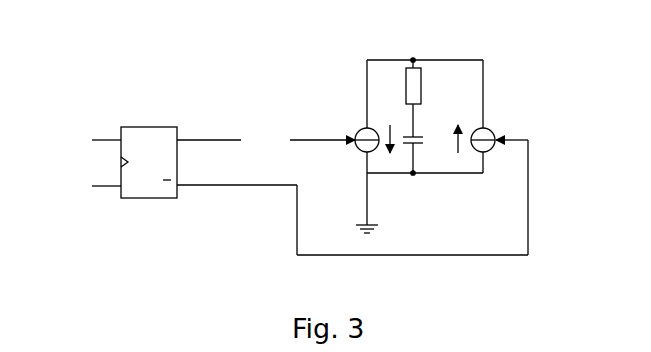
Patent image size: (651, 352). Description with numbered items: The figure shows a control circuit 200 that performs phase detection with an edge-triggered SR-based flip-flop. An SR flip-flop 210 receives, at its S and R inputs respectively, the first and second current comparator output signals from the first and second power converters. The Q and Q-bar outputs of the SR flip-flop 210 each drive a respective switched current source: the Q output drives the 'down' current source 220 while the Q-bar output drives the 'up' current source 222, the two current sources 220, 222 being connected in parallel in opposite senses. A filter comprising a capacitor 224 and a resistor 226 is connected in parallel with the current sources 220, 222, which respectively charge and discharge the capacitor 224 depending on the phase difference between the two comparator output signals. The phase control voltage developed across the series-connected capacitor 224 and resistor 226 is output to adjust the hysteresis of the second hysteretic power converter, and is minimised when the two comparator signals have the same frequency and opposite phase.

The control circuit 200 is at (125, 292).
The SR flip-flop 210 is at (146, 122).
The down current source 220 is at (350, 117).
The up current source 222 is at (503, 115).
The capacitor 224 is at (423, 150).
The resistor 226 is at (425, 80).